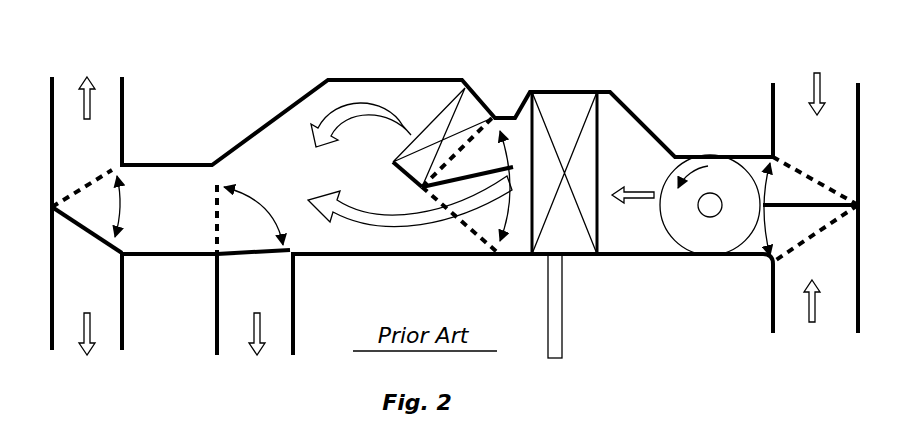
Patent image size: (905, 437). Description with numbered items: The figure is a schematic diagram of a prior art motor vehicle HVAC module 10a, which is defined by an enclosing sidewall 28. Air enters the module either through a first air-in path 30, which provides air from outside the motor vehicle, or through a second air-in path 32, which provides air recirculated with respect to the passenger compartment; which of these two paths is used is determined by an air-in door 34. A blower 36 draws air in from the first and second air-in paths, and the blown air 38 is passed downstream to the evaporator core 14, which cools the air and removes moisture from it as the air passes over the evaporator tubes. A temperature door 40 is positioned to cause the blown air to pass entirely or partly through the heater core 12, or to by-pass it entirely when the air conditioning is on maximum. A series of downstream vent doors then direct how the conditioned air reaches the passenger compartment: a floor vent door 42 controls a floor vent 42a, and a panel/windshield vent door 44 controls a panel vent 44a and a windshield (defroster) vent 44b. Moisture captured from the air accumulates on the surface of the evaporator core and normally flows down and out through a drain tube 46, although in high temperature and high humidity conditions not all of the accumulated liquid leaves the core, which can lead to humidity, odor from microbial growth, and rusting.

The HVAC module 10a is at (495, 63).
The heater core 12 is at (443, 118).
The evaporator core 14 is at (577, 100).
The enclosing sidewall 28 is at (300, 100).
The first air-in path 30 is at (793, 97).
The second air-in path 32 is at (787, 320).
The air-in door 34 is at (818, 208).
The blower 36 is at (723, 173).
The blown air 38 is at (633, 193).
The temperature door 40 is at (462, 178).
The floor vent door 42 is at (255, 253).
The floor vent 42a is at (275, 307).
The panel/windshield vent door 44 is at (80, 233).
The panel vent 44a is at (88, 293).
The windshield (defroster) vent 44b is at (108, 122).
The drain tube 46 is at (562, 300).